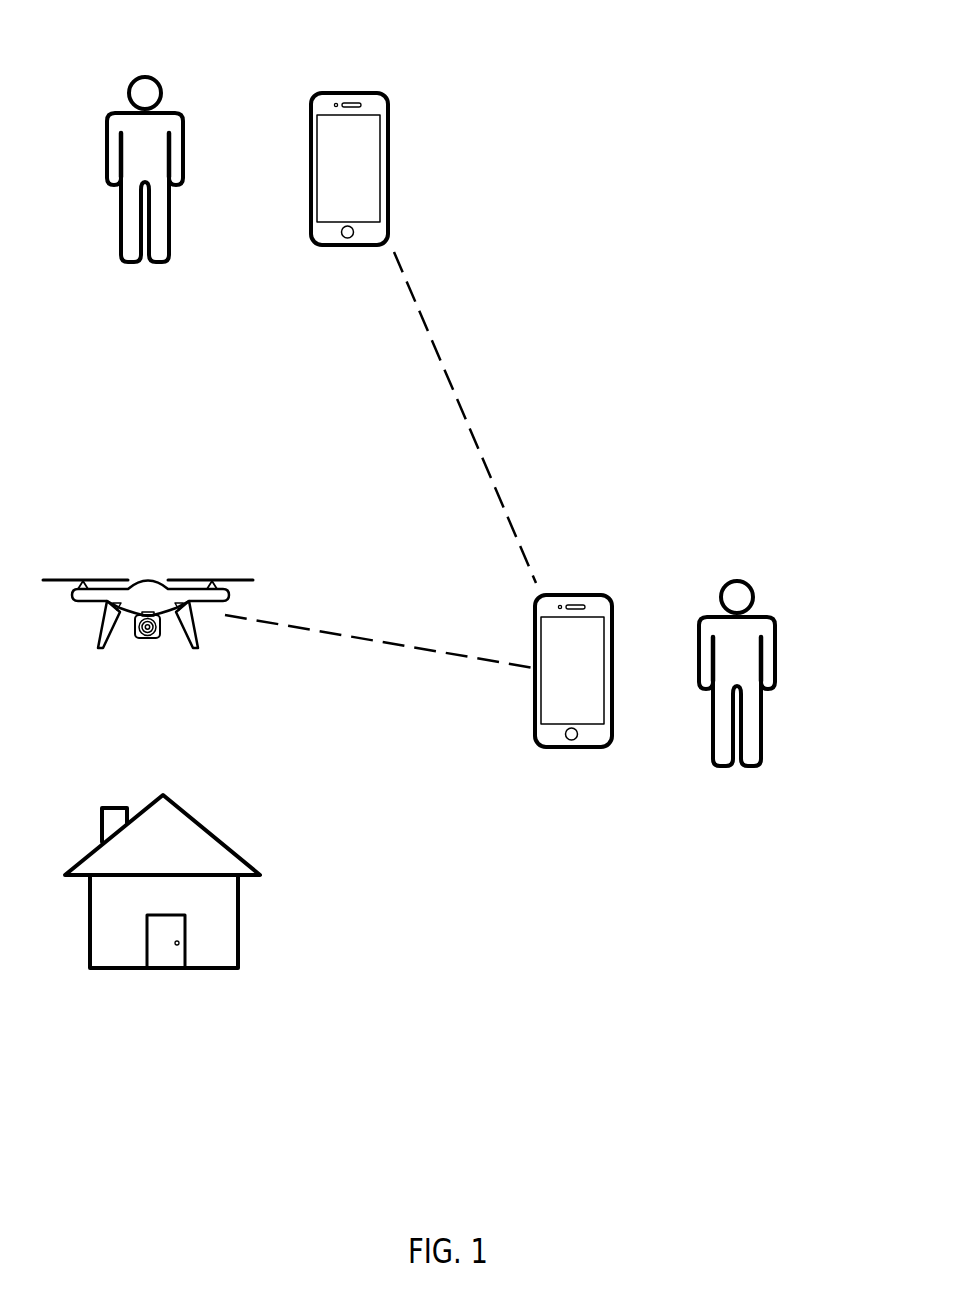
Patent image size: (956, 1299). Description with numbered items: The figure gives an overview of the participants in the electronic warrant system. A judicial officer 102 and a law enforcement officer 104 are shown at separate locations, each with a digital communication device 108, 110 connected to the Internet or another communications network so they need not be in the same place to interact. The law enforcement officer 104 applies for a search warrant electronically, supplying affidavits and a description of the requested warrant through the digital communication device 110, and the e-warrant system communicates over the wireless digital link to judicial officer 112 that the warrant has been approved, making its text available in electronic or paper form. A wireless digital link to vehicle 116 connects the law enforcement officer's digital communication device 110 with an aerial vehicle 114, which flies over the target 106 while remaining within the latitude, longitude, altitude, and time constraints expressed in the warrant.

The judicial officer 102 is at (108, 157).
The law enforcement officer 104 is at (777, 655).
The target 106 is at (238, 908).
The digital communication device 108 is at (388, 172).
The digital communication device 110 is at (613, 675).
The wireless digital link to judicial officer 112 is at (503, 502).
The aerial vehicle 114 is at (146, 582).
The wireless digital link to vehicle 116 is at (340, 635).